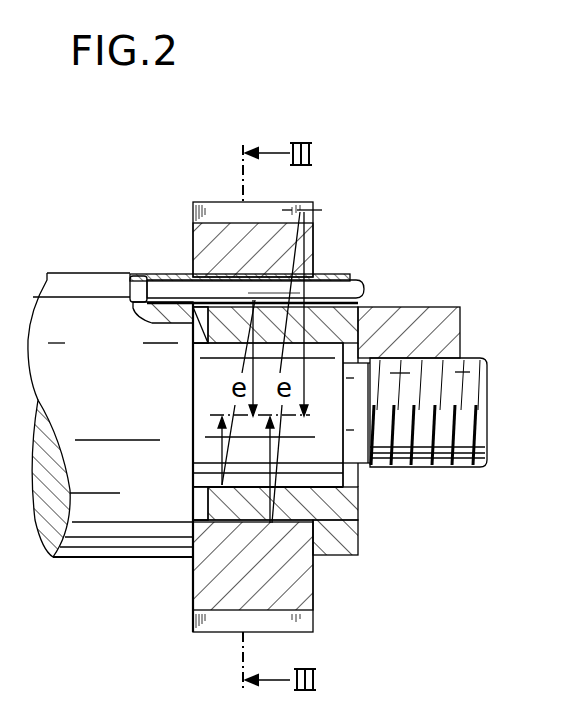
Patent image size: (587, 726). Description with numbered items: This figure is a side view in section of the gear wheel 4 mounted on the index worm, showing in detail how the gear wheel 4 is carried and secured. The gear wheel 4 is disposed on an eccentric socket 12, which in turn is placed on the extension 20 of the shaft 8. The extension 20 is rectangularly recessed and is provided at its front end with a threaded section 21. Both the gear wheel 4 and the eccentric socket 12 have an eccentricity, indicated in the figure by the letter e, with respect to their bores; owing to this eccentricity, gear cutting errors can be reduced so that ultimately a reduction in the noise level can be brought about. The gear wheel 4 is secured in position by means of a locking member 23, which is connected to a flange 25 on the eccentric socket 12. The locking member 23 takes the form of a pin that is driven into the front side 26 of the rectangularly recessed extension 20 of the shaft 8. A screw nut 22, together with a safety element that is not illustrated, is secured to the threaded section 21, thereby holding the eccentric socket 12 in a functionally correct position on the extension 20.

The gear wheel 4 is at (200, 580).
The shaft 8 is at (82, 290).
The eccentric socket 12 is at (350, 548).
The extension 20 is at (200, 375).
The threaded section 21 is at (458, 372).
The screw nut 22 is at (441, 307).
The locking member 23 is at (172, 290).
The flange 25 is at (351, 276).
The front side 26 is at (193, 507).